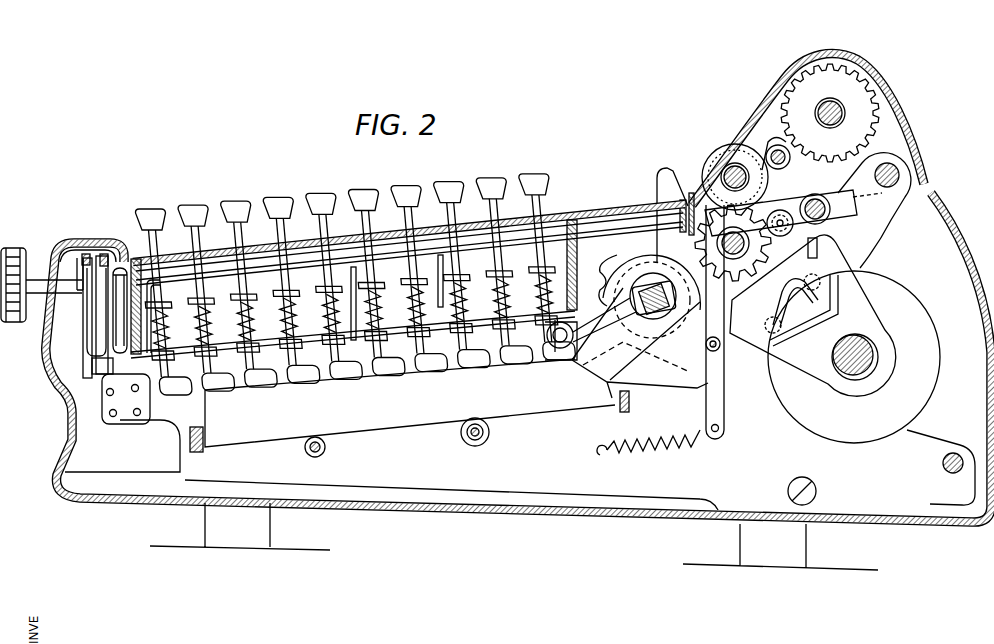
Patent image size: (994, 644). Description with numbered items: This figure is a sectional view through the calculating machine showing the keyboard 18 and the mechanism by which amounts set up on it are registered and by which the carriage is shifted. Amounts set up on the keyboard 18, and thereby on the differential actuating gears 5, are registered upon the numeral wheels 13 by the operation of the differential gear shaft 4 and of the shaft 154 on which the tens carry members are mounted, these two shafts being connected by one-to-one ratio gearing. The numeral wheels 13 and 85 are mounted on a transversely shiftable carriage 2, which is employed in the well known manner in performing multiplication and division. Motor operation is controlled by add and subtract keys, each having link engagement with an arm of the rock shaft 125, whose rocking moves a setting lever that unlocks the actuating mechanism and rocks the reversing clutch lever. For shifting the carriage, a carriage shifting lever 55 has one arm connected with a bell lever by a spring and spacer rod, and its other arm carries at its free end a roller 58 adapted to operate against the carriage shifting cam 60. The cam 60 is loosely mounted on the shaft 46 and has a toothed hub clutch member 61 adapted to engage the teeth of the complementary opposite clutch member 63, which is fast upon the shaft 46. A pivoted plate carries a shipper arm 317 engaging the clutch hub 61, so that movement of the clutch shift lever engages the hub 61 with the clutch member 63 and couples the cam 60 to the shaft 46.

The transversely shiftable carriage 2 is at (893, 131).
The differential gear shaft 4 is at (651, 284).
The differential actuating gears 5 is at (613, 270).
The numeral wheels 13 is at (718, 163).
The keyboard 18 is at (368, 191).
The shaft 46 is at (31, 279).
The carriage shifting lever 55 is at (93, 350).
The roller 58 is at (97, 383).
The carriage shifting cam 60 is at (94, 366).
The toothed hub clutch member 61 is at (80, 277).
The complementary opposite clutch member 63 is at (62, 257).
The numeral wheels 85 is at (876, 77).
The rock shaft 125 is at (474, 440).
The shaft 154 is at (872, 356).
The shipper arm 317 is at (106, 254).